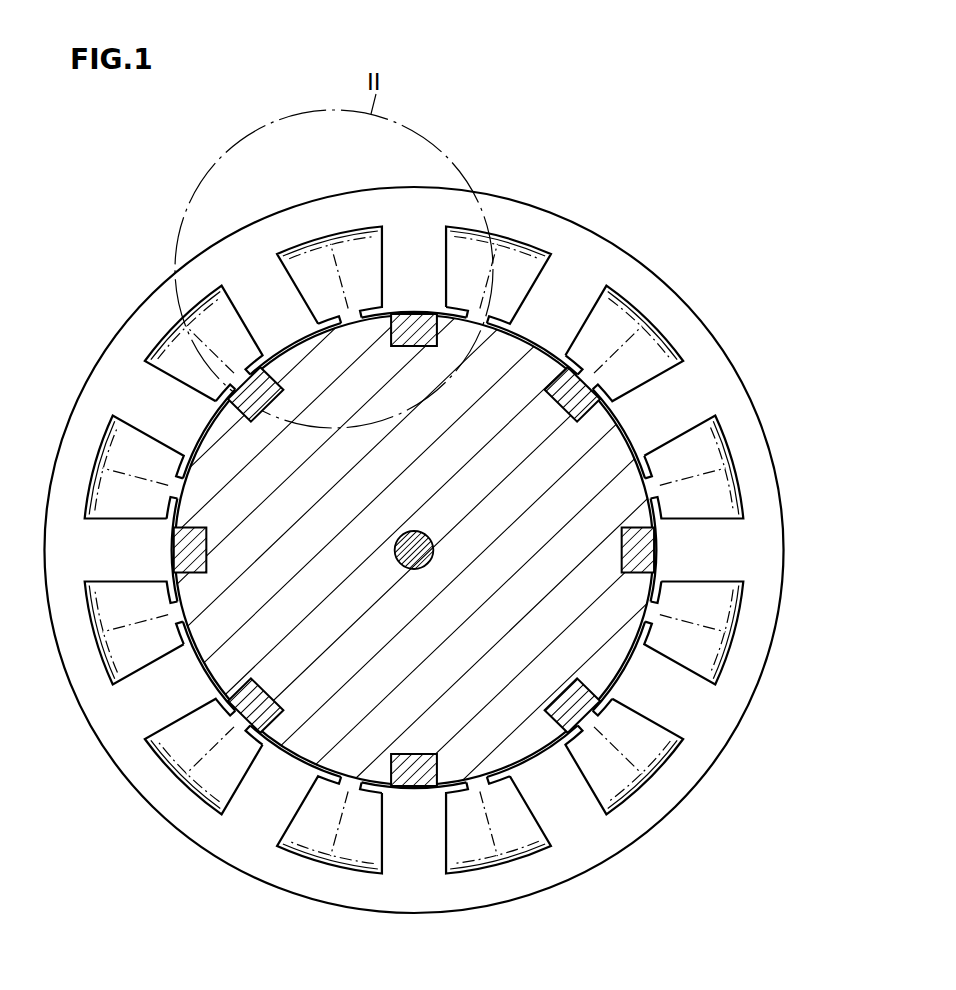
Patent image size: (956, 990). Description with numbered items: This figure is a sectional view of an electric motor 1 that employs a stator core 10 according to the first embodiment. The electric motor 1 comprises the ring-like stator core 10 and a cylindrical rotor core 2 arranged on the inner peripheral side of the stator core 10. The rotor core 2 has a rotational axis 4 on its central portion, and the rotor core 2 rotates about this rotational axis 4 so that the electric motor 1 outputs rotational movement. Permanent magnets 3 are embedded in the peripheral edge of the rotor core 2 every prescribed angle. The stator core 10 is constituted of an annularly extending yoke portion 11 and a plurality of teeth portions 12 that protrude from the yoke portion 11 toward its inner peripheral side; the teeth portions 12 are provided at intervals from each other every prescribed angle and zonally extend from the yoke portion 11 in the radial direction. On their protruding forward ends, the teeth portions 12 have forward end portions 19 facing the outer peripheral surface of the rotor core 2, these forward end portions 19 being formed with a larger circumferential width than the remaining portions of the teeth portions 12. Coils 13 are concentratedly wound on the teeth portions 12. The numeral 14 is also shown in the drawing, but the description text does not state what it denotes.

The electric motor 1 is at (597, 177).
The rotor core 2 is at (611, 657).
The permanent magnets 3 is at (633, 553).
The rotational axis 4 is at (402, 563).
The stator core 10 is at (96, 336).
The yoke portion 11 is at (666, 303).
The teeth portions 12 is at (667, 412).
The coils 13 is at (667, 381).
The coil winding slot 14 is at (612, 332).
The forward end portions 19 is at (657, 528).